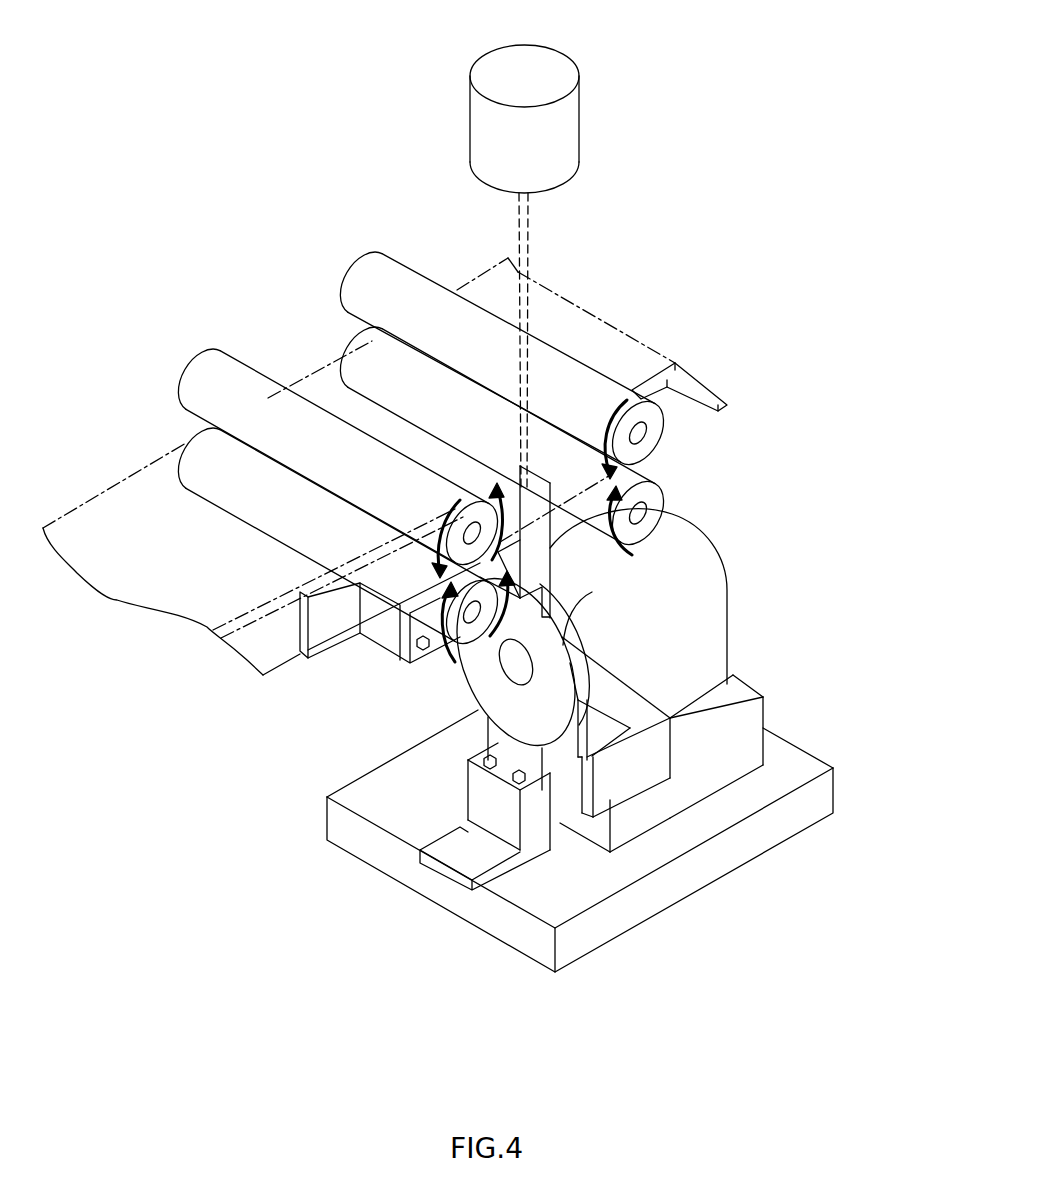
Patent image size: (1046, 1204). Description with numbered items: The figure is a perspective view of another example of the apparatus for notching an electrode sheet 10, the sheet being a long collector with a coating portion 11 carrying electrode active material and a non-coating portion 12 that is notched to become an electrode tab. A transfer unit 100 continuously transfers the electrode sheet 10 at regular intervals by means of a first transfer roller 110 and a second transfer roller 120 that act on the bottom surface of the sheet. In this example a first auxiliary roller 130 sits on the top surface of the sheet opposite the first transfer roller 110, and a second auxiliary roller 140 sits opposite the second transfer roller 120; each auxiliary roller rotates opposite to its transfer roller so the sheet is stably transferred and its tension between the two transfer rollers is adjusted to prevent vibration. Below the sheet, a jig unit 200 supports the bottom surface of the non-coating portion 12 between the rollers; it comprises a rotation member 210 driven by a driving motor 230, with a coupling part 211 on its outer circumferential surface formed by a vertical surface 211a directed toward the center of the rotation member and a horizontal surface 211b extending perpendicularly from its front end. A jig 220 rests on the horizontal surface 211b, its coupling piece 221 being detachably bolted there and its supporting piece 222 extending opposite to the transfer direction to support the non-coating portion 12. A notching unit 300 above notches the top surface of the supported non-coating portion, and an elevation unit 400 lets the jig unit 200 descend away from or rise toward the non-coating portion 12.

The electrode sheet 10 is at (400, 456).
The coating portion 11 is at (633, 348).
The non-coating portion 12 is at (694, 364).
The transfer unit 100 is at (393, 434).
The first transfer roller 110 is at (314, 520).
The second transfer roller 120 is at (363, 360).
The first auxiliary roller 130 is at (212, 363).
The second auxiliary roller 140 is at (370, 273).
The jig unit 200 is at (700, 641).
The rotation member 210 is at (671, 597).
The coupling part 211 is at (671, 597).
The vertical surface 211a is at (550, 596).
The horizontal surface 211b is at (585, 535).
The jig 220 is at (733, 755).
The coupling piece 221 is at (640, 712).
The supporting piece 222 is at (660, 742).
The driving motor 230 is at (708, 602).
The notching unit 300 is at (567, 130).
The elevation unit 400 is at (697, 787).